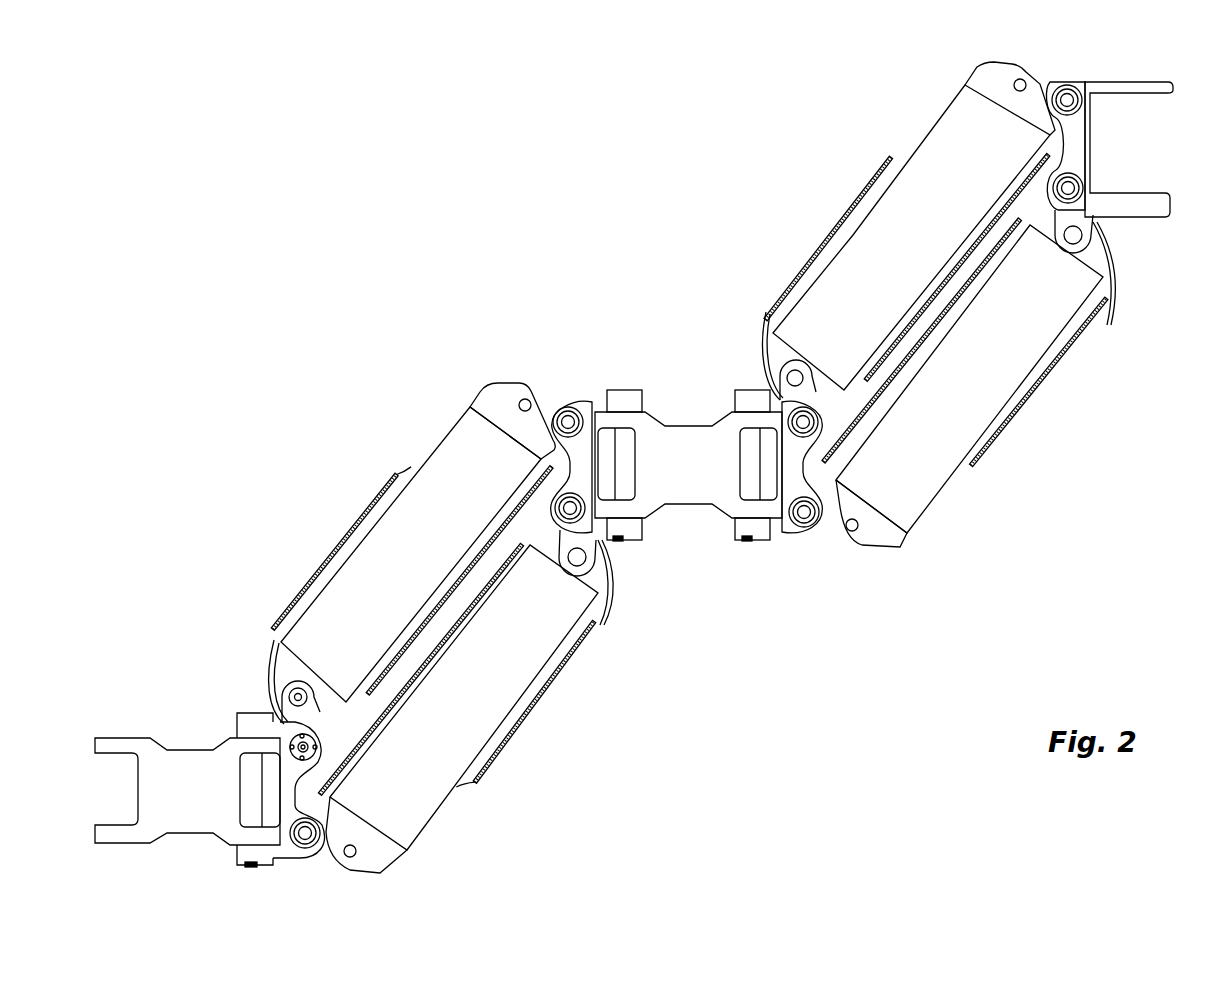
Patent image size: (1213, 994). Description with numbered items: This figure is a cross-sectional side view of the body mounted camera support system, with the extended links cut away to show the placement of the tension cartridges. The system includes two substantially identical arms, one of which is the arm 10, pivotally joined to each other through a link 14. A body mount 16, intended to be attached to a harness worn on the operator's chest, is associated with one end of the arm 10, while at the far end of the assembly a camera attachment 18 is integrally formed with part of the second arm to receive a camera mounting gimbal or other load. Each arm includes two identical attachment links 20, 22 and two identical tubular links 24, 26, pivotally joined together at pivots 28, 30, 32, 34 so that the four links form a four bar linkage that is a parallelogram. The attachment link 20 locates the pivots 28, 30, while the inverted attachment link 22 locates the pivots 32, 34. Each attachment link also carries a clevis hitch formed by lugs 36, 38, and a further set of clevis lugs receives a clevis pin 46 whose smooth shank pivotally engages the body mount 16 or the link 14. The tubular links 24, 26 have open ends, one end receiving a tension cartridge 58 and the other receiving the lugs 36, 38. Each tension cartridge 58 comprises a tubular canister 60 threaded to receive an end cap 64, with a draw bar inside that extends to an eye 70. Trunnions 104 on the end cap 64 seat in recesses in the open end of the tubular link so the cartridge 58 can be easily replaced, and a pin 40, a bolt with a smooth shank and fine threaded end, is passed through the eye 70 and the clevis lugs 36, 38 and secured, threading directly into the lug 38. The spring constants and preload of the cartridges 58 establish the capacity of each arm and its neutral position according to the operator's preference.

The arm 10 is at (358, 512).
The link 14 is at (684, 422).
The body mount 16 is at (186, 746).
The camera attachment 18 is at (1113, 80).
The attachment link 20 is at (778, 538).
The attachment link 22 is at (603, 390).
The tubular link 24 is at (315, 540).
The tubular link 26 is at (540, 703).
The pivot 28 is at (312, 748).
The pivot 30 is at (305, 846).
The pivot 32 is at (568, 410).
The pivot 34 is at (580, 516).
The lug 36 is at (598, 580).
The lug 38 is at (278, 706).
The pin 40 is at (300, 694).
The clevis pin 46 is at (628, 452).
The tension cartridge 58 is at (921, 122).
The tubular canister 60 is at (440, 445).
The end cap 64 is at (986, 62).
The eye 70 is at (272, 662).
The trunnion 104 is at (1020, 79).